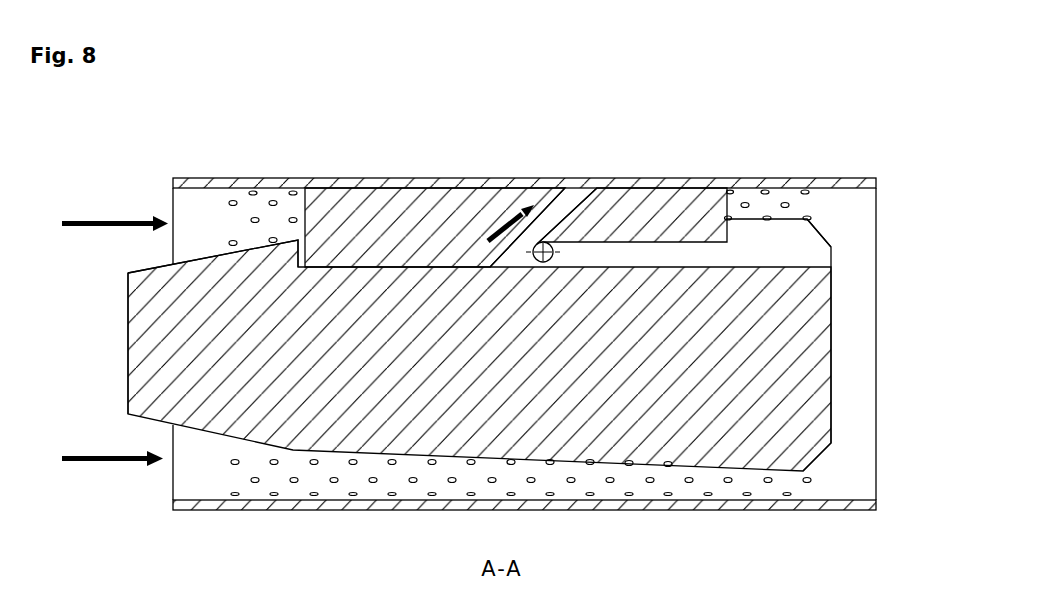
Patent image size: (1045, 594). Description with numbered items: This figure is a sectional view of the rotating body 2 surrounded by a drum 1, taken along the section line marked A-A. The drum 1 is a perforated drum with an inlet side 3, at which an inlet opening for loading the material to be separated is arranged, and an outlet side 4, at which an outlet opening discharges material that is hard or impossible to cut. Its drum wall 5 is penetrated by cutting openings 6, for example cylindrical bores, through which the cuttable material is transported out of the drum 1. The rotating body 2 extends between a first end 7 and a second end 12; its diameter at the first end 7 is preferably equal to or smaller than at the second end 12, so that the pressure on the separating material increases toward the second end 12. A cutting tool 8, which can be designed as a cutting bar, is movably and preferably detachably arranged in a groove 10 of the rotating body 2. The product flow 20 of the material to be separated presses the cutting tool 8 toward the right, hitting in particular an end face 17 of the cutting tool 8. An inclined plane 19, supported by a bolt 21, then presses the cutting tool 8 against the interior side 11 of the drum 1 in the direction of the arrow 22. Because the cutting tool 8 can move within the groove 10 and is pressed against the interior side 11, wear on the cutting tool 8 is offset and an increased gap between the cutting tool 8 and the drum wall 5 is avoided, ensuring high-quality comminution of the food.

The drum 1 is at (513, 299).
The rotating body 2 is at (501, 290).
The inlet side 3 is at (173, 203).
The outlet side 4 is at (876, 238).
The drum wall 5 is at (760, 183).
The cutting openings 6 is at (259, 220).
The first end 7 is at (128, 352).
The cutting tool 8 is at (612, 212).
The groove 10 is at (298, 268).
The interior side 11 is at (839, 193).
The second end 12 is at (831, 367).
The end face 17 is at (306, 190).
The inclined plane 19 is at (505, 260).
The product flow 20 is at (107, 220).
The bolt 21 is at (549, 242).
The arrow 22 is at (513, 216).